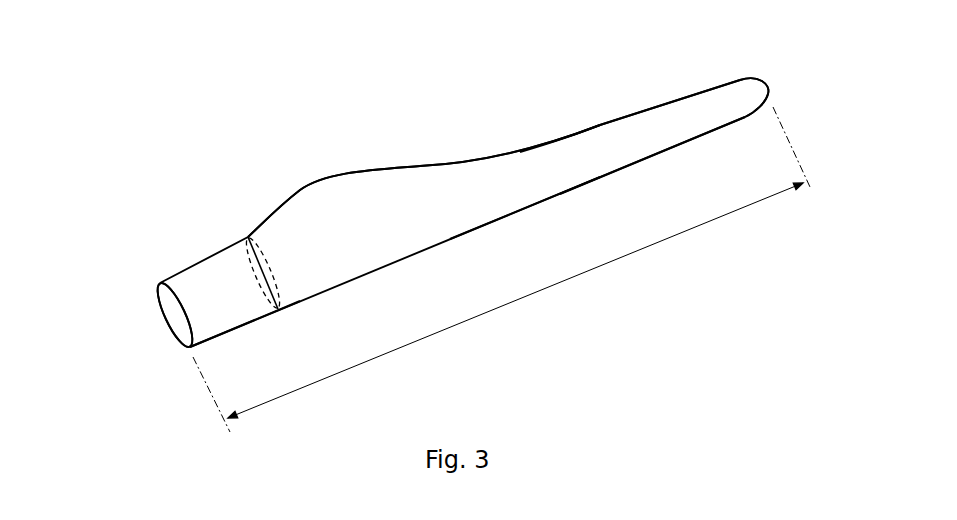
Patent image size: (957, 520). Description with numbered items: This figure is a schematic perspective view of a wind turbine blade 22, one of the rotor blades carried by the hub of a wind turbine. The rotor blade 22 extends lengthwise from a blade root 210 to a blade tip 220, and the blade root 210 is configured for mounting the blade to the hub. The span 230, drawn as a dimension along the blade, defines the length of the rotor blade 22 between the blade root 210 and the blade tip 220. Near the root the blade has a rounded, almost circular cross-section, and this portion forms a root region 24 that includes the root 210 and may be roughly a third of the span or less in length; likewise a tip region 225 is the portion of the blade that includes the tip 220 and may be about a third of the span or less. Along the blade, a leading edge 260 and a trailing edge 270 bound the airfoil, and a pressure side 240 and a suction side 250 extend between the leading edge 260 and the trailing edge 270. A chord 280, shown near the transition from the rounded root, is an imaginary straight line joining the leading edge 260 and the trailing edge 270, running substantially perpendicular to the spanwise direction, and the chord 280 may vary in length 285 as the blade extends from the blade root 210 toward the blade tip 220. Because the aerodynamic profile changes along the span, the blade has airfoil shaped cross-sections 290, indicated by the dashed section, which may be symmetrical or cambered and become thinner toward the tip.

The wind turbine blade 22 is at (248, 117).
The root region 24 is at (250, 328).
The blade root 210 is at (145, 323).
The blade tip 220 is at (778, 83).
The tip region 225 is at (613, 130).
The span 230 is at (513, 301).
The pressure side 240 is at (332, 212).
The suction side 250 is at (525, 195).
The leading edge 260 is at (568, 192).
The trailing edge 270 is at (517, 152).
The chord 280 is at (250, 270).
The length 285 is at (547, 142).
The airfoil shaped cross-section 290 is at (270, 253).